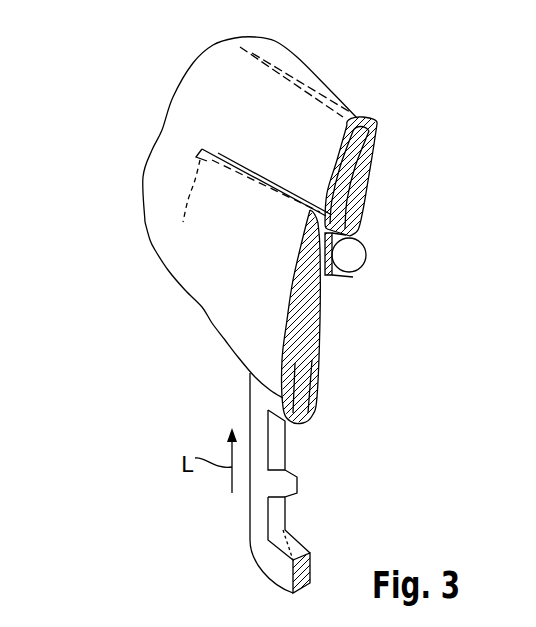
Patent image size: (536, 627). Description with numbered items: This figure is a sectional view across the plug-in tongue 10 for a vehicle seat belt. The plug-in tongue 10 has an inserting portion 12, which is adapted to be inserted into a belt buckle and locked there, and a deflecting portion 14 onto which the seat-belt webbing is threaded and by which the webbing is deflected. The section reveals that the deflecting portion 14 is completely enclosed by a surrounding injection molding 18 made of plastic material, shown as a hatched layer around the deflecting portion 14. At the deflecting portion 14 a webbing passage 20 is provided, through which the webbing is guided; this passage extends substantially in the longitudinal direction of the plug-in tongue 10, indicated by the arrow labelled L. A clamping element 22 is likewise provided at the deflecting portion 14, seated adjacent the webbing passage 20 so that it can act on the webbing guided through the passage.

The plug-in tongue 10 is at (134, 99).
The inserting portion 12 is at (299, 408).
The deflecting portion 14 is at (367, 160).
The surrounding injection molding 18 is at (358, 188).
The webbing passage 20 is at (340, 277).
The clamping element 22 is at (348, 256).